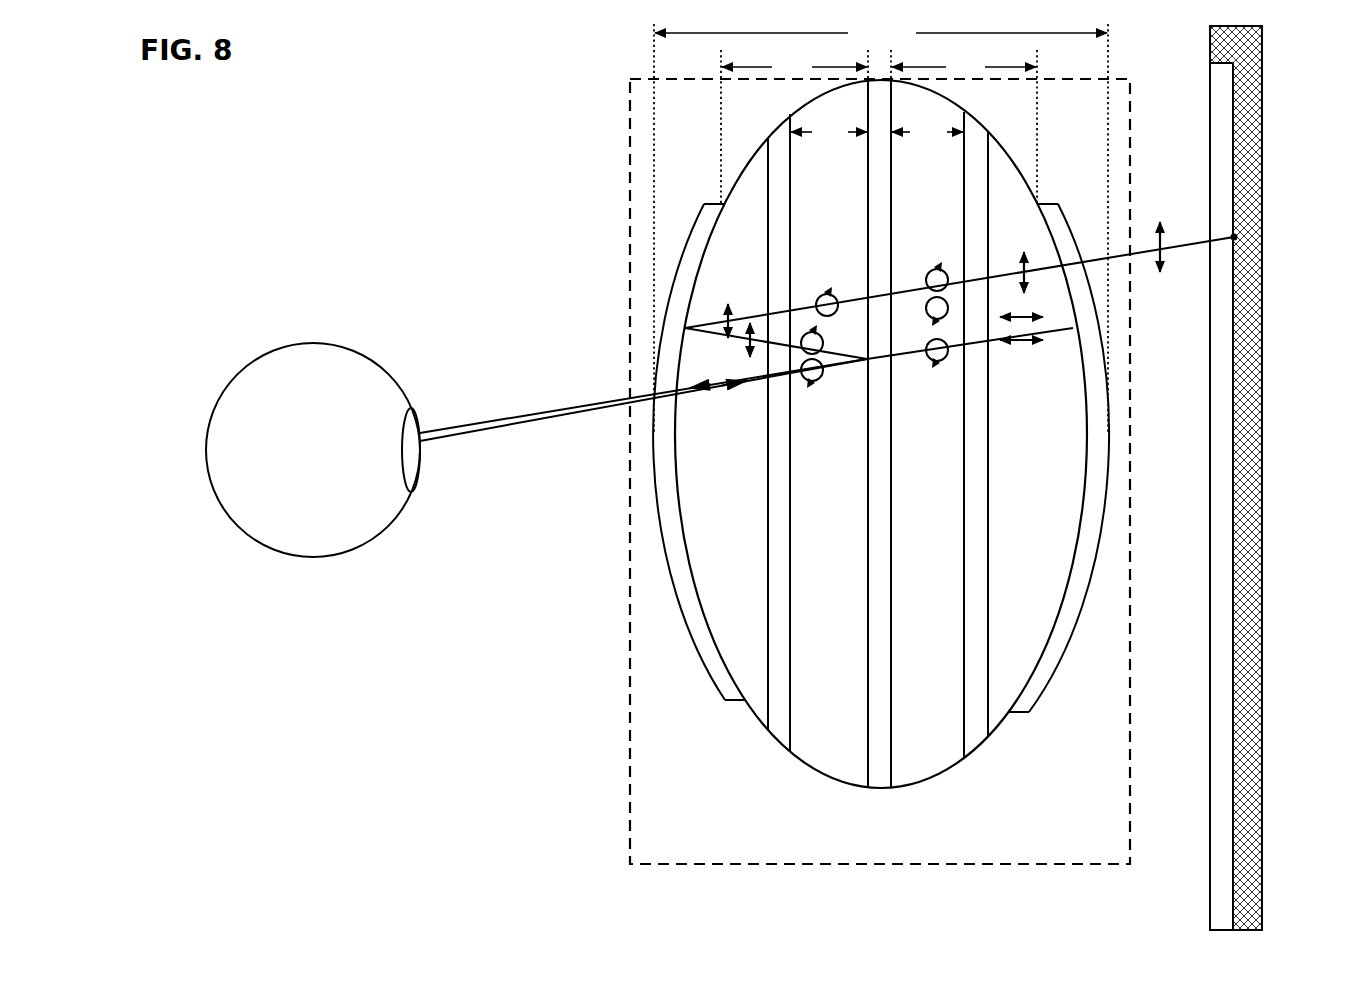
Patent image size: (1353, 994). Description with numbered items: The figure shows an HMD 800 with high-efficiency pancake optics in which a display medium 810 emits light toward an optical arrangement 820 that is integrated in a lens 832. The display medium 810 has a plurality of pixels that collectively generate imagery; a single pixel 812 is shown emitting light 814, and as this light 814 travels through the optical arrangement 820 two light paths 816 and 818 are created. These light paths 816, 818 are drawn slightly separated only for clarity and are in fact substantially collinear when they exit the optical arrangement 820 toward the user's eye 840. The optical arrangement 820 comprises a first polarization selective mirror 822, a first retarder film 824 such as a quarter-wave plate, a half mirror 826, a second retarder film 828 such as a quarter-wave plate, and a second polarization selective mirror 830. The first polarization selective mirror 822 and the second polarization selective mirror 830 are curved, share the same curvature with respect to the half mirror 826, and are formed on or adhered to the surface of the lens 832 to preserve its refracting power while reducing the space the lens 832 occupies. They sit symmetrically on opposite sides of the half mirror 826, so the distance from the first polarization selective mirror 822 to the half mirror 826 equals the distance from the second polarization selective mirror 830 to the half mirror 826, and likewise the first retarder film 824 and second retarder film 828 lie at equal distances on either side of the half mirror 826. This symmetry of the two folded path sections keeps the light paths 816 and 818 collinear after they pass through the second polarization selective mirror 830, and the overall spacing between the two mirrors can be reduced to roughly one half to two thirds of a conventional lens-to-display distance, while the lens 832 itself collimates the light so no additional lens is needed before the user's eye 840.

The HMD 800 is at (430, 96).
The display medium 810 is at (1262, 430).
The pixel 812 is at (1240, 238).
The light 814 is at (1202, 256).
The light path 816 is at (530, 421).
The light path 818 is at (534, 424).
The optical arrangement 820 is at (628, 262).
The first polarization selective mirror 822 is at (1052, 676).
The first retarder film 824 is at (967, 754).
The half mirror 826 is at (877, 790).
The second retarder film 828 is at (774, 745).
The second polarization selective mirror 830 is at (704, 668).
The lens 832 is at (737, 170).
The user's eye 840 is at (318, 558).